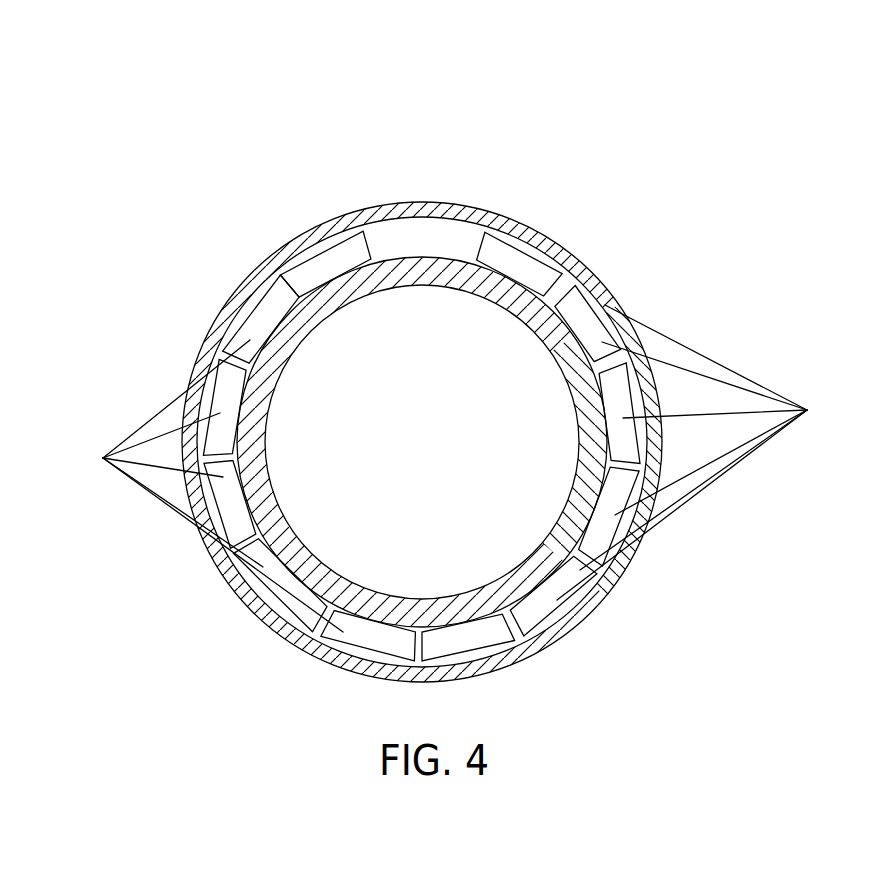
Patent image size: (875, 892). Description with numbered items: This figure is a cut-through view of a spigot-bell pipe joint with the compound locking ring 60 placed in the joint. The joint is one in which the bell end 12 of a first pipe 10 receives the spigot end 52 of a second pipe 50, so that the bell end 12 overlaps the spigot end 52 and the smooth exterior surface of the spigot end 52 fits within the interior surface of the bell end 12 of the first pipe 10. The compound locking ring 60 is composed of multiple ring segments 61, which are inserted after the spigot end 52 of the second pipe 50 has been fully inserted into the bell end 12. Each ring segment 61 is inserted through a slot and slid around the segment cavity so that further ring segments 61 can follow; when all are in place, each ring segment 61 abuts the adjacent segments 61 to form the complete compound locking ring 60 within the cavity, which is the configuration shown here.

The first pipe 10 is at (455, 387).
The bell end 12 is at (563, 262).
The second pipe 50 is at (422, 442).
The spigot end 52 is at (422, 442).
The compound locking ring 60 is at (494, 258).
The ring segments 61 is at (455, 468).